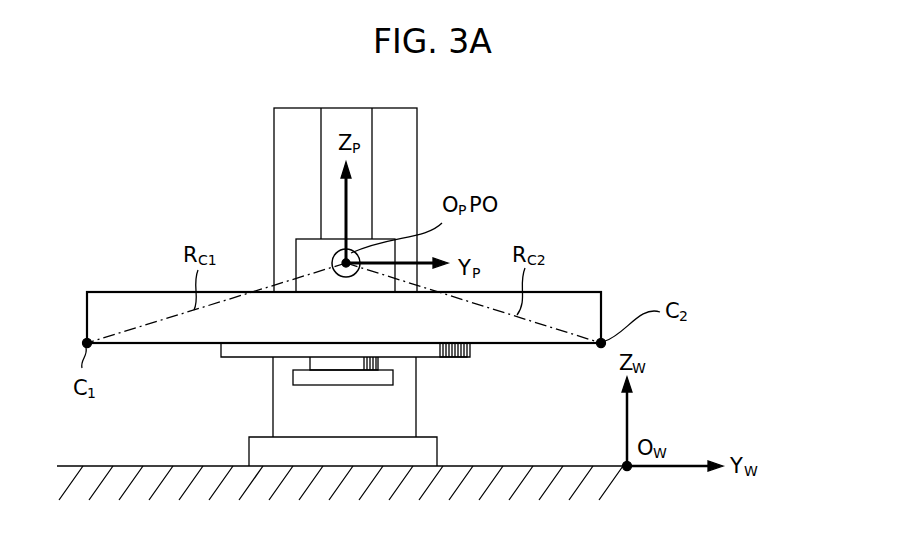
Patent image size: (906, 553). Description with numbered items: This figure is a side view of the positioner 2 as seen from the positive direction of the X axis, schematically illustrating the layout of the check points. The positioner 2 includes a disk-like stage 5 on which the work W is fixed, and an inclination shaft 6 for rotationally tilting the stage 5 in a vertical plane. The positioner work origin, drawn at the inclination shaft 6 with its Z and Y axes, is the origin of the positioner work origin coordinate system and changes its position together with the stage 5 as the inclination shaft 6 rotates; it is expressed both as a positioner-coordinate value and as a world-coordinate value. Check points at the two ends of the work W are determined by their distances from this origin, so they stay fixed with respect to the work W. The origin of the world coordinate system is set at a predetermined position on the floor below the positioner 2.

The positioner 2 is at (419, 140).
The stage 5 is at (436, 357).
The inclination shaft 6 is at (341, 253).
The work W is at (578, 292).